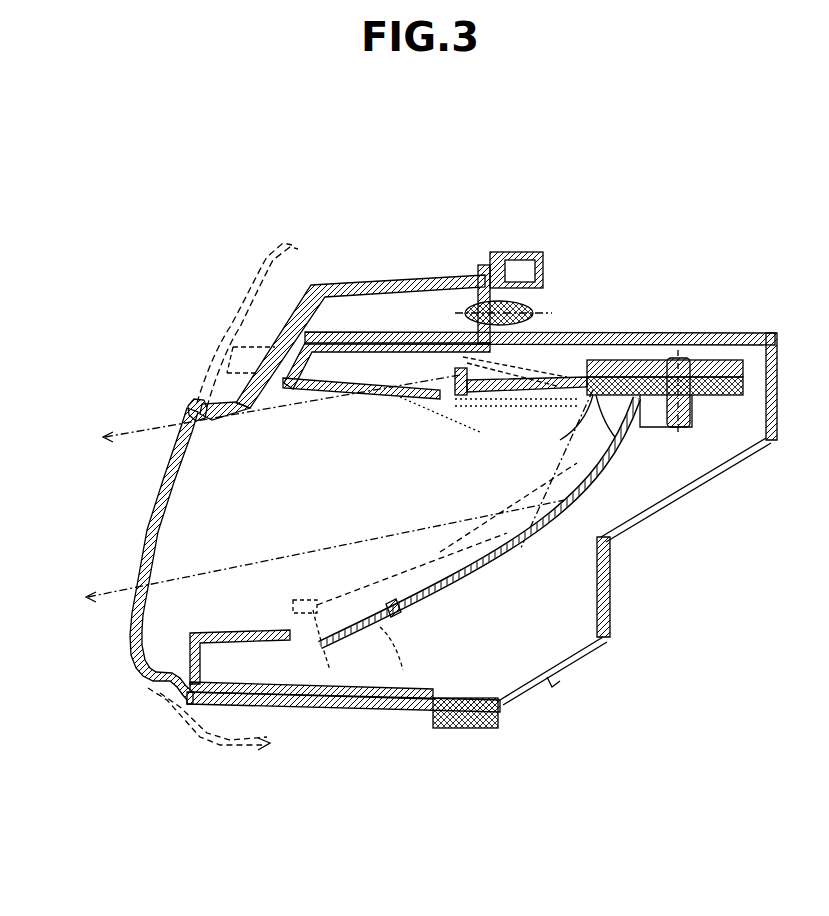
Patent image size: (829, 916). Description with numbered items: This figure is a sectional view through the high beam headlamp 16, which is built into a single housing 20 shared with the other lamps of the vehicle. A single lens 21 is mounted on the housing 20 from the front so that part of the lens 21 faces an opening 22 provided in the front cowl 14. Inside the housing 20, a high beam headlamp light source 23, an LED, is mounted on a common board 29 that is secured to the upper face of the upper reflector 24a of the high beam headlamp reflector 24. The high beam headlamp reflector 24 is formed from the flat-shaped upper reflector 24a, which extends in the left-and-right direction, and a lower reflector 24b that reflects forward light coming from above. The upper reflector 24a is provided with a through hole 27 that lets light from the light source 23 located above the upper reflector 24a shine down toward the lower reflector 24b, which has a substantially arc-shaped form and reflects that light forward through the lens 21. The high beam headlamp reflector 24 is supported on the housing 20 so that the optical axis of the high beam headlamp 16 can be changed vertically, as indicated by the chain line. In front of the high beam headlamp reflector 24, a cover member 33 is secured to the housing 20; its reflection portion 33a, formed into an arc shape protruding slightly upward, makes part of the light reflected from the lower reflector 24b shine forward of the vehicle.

The front cowl 14 is at (232, 309).
The high beam headlamp 16 is at (150, 525).
The housing 20 is at (577, 660).
The lens 21 is at (146, 553).
The opening 22 is at (188, 414).
The high beam headlamp light source 23 is at (595, 392).
The high beam headlamp reflector 24 is at (487, 563).
The upper reflector 24a is at (507, 400).
The lower reflector 24b is at (395, 610).
The through hole 27 is at (590, 398).
The common board 29 is at (703, 370).
The cover member 33 is at (292, 697).
The reflection portion 33a is at (397, 397).